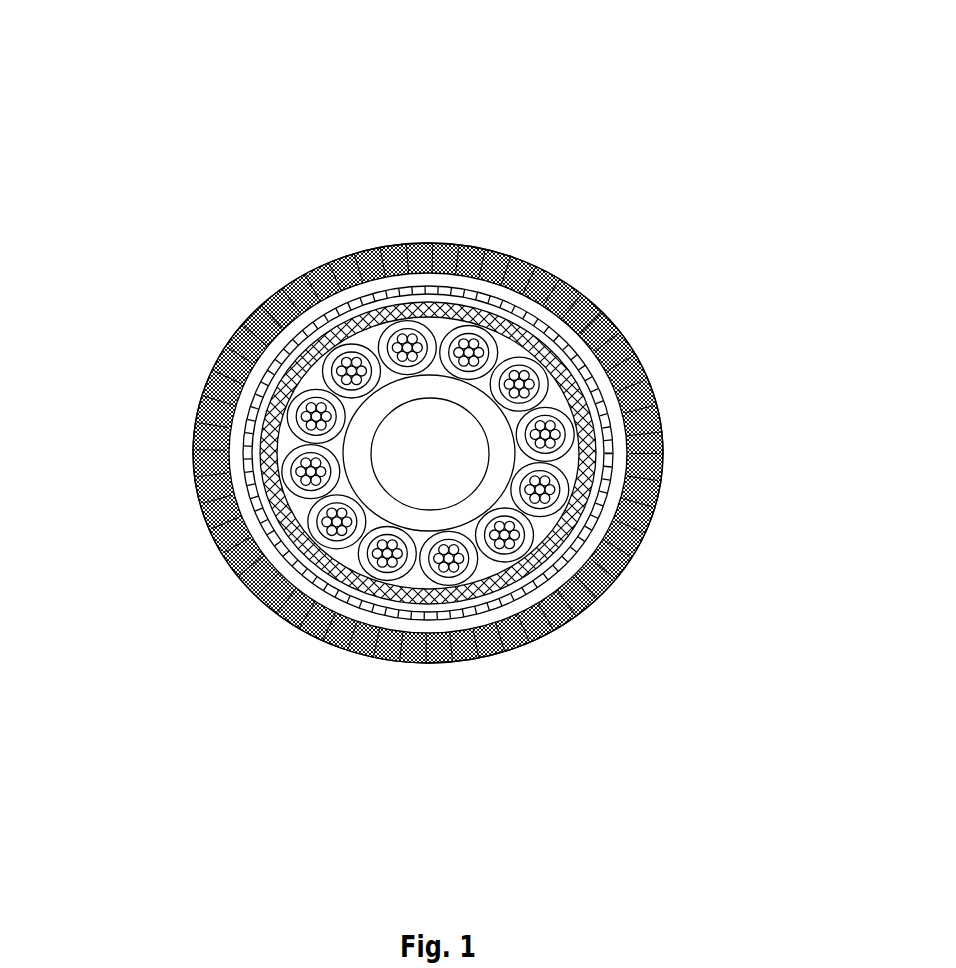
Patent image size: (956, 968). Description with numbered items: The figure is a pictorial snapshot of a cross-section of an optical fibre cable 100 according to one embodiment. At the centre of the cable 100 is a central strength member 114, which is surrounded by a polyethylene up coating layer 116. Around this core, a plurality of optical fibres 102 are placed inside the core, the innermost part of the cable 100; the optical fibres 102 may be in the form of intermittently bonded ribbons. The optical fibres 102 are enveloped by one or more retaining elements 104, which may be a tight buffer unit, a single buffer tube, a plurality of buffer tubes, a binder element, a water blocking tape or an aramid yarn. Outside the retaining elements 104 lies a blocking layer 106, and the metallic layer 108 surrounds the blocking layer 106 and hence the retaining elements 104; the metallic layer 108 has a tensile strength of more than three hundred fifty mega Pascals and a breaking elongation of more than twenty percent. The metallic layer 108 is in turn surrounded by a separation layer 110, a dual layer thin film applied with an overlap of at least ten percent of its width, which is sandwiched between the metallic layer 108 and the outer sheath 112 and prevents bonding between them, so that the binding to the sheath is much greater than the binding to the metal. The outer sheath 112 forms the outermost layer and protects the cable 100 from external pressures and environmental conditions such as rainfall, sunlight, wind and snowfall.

The optical fibre cable 100 is at (198, 90).
The optical fibres 102 is at (423, 332).
The retaining elements 104 is at (388, 307).
The blocking layer 106 is at (270, 387).
The metallic layer 108 is at (503, 307).
The separation layer 110 is at (593, 302).
The outer sheath 112 is at (197, 417).
The central strength member 114 is at (440, 477).
The polyethylene up coating layer 116 is at (318, 566).